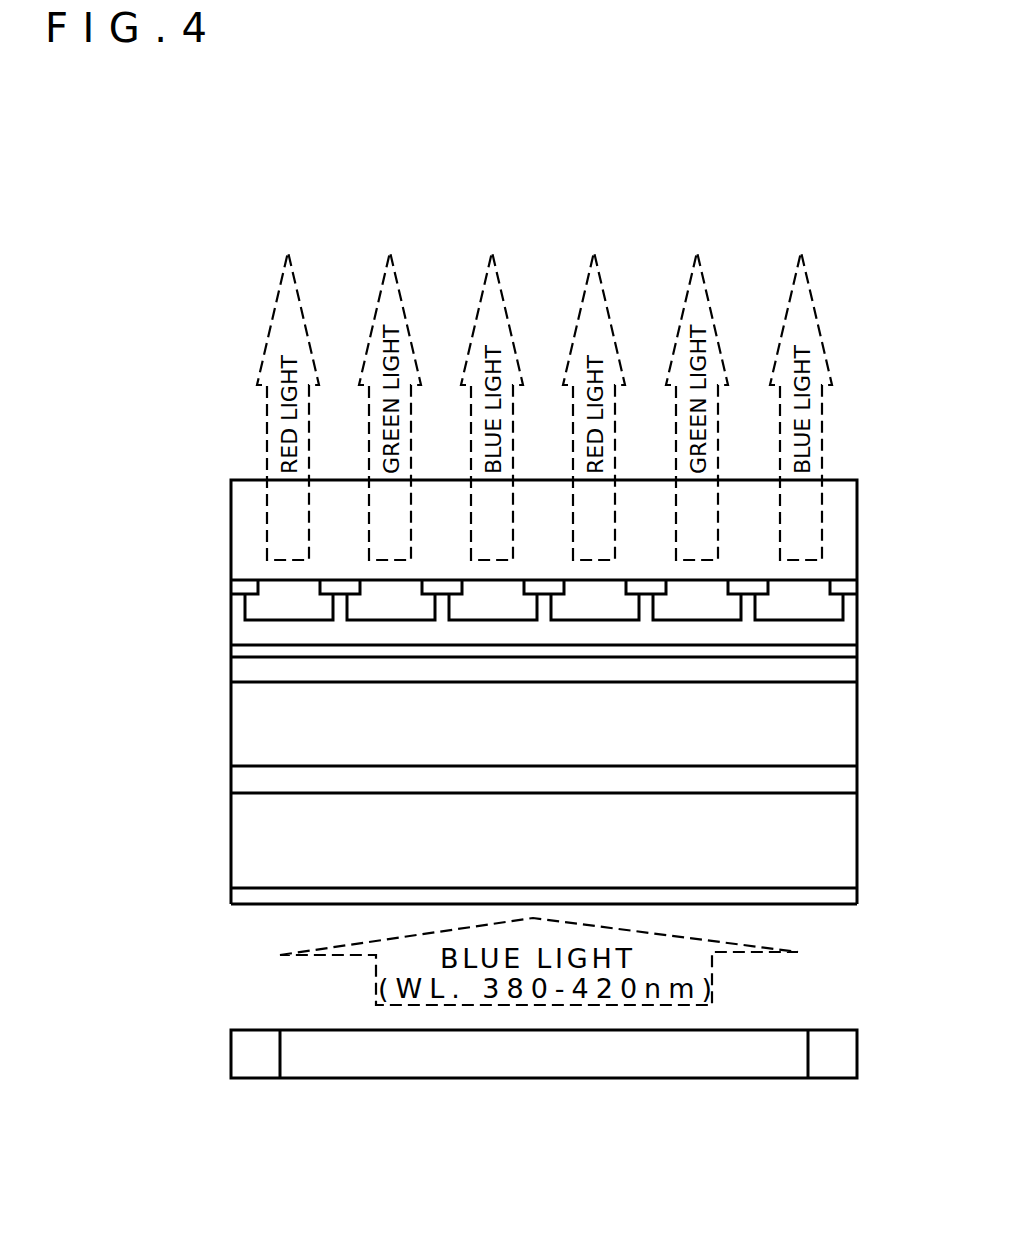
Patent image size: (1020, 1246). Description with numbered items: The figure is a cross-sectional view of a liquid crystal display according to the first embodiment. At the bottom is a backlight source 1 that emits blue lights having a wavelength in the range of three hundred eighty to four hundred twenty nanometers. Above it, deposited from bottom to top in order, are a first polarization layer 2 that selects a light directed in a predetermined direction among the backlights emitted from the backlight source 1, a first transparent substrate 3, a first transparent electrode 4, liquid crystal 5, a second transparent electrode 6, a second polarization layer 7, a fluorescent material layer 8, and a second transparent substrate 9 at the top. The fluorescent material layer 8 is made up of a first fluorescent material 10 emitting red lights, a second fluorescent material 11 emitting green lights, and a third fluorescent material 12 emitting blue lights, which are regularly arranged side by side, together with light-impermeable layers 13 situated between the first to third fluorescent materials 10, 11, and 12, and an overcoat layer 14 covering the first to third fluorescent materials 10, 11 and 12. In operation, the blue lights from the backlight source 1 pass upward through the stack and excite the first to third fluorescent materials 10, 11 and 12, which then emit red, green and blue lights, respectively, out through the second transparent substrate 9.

The backlight source 1 is at (317, 1035).
The first polarization layer 2 is at (242, 897).
The first transparent substrate 3 is at (245, 838).
The first transparent electrode 4 is at (250, 780).
The liquid crystal 5 is at (838, 743).
The second transparent electrode 6 is at (250, 668).
The second polarization layer 7 is at (845, 648).
The fluorescent material layer 8 is at (572, 657).
The second transparent substrate 9 is at (838, 545).
The first fluorescent material 10 is at (290, 604).
The second fluorescent material 11 is at (393, 604).
The third fluorescent material 12 is at (481, 604).
The light-impermeable layers 13 is at (243, 590).
The overcoat layer 14 is at (252, 628).